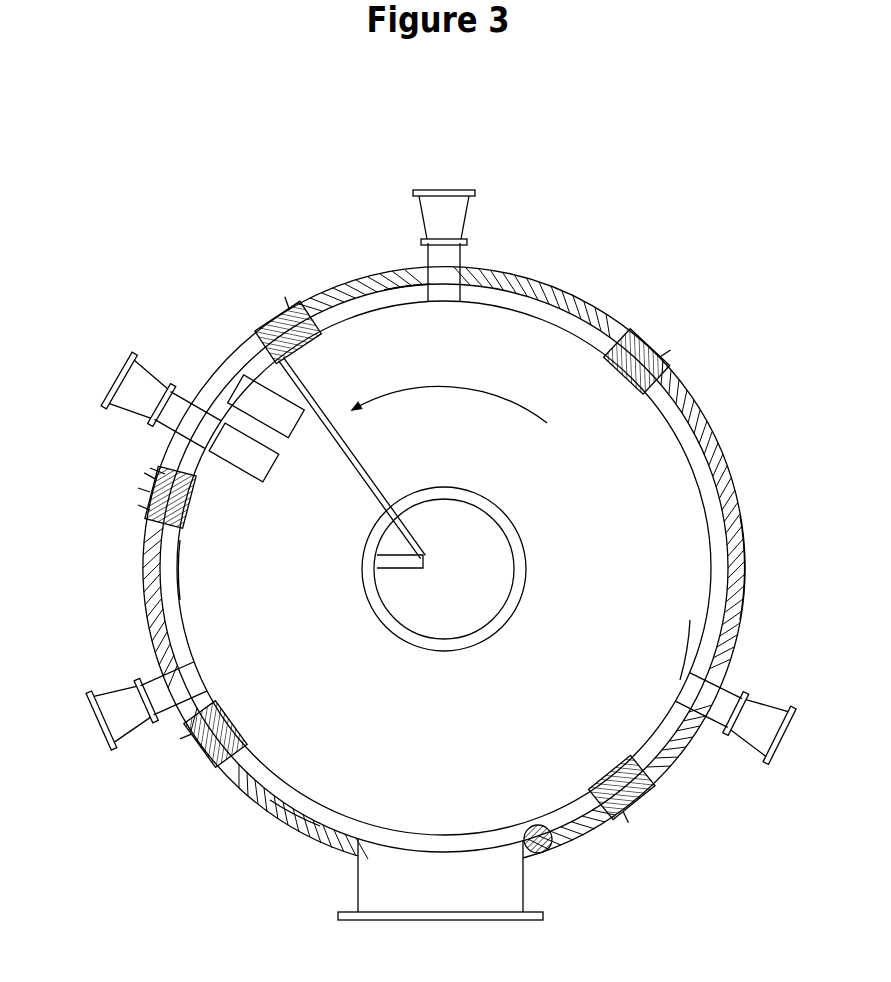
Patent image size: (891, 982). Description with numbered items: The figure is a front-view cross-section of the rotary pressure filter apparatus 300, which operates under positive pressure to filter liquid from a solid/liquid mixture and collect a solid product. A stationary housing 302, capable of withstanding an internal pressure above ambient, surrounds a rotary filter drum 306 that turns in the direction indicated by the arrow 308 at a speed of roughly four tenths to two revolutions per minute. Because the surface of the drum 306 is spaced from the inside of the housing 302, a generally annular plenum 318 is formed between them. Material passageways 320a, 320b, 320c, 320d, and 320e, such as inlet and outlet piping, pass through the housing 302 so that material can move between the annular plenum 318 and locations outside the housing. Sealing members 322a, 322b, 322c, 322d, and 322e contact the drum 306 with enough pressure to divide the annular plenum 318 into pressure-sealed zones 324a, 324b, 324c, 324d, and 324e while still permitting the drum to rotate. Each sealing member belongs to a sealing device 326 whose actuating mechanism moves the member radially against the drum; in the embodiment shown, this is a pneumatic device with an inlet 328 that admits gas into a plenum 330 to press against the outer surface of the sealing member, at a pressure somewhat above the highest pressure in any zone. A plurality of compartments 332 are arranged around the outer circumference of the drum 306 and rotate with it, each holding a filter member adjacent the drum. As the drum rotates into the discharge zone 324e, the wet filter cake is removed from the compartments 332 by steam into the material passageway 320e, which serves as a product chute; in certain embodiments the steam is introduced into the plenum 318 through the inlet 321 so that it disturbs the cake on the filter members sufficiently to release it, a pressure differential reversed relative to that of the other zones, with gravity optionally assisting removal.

The rotary pressure filter apparatus 300 is at (236, 218).
The stationary housing 302 is at (542, 283).
The rotary filter drum 306 is at (598, 560).
The arrow 308 is at (468, 392).
The annular plenum 318 is at (784, 568).
The material passageway 320a is at (772, 698).
The material passageway 320b is at (455, 185).
The material passageway 320c is at (140, 345).
The material passageway 320d is at (142, 742).
The material passageway 320e is at (400, 879).
The inlet 321 is at (546, 855).
The sealing member 322a is at (600, 770).
The sealing member 322b is at (668, 385).
The sealing member 322c is at (308, 300).
The sealing member 322d is at (194, 524).
The sealing member 322e is at (238, 715).
The zone 324a is at (700, 650).
The zone 324b is at (407, 300).
The zone 324c is at (200, 468).
The zone 324d is at (185, 592).
The discharge zone 324e is at (300, 790).
The sealing device 326 is at (140, 507).
The inlet 328 is at (97, 506).
The plenum 330 is at (157, 470).
The compartments 332 is at (308, 406).